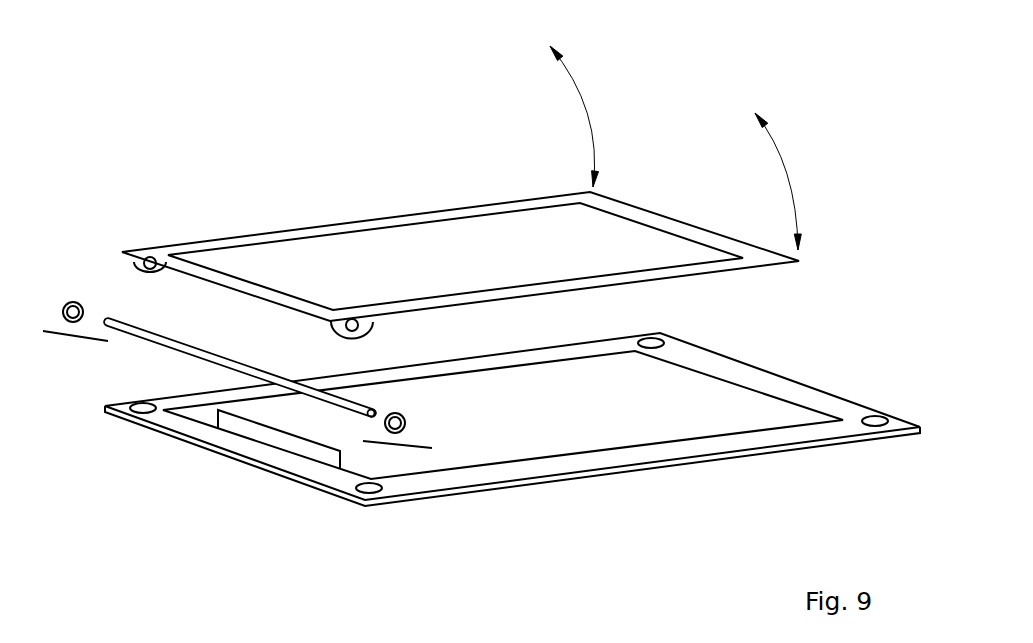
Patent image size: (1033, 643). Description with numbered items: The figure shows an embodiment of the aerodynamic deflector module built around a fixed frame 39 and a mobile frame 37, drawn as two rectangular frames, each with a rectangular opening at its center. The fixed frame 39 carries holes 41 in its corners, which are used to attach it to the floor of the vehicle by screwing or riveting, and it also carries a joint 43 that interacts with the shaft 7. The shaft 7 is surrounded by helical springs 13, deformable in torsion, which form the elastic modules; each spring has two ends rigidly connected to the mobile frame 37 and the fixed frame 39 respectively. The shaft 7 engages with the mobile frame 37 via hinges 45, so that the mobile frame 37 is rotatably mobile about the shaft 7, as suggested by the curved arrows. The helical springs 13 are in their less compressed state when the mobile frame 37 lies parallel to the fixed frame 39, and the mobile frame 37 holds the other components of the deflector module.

The shaft 7 is at (112, 316).
The helical springs 13 is at (72, 303).
The mobile frame 37 is at (452, 207).
The fixed frame 39 is at (857, 403).
The holes 41 is at (142, 413).
The joint 43 is at (265, 443).
The hinges 45 is at (150, 257).